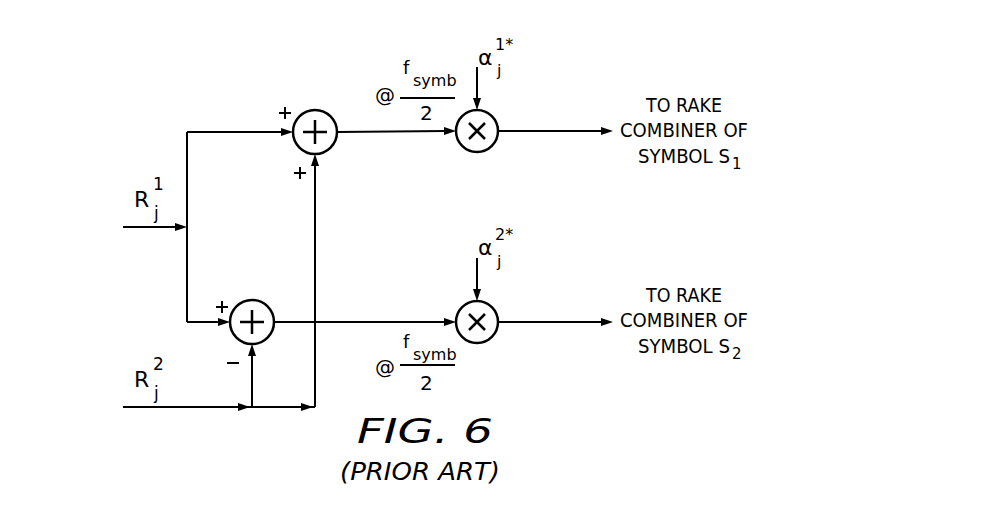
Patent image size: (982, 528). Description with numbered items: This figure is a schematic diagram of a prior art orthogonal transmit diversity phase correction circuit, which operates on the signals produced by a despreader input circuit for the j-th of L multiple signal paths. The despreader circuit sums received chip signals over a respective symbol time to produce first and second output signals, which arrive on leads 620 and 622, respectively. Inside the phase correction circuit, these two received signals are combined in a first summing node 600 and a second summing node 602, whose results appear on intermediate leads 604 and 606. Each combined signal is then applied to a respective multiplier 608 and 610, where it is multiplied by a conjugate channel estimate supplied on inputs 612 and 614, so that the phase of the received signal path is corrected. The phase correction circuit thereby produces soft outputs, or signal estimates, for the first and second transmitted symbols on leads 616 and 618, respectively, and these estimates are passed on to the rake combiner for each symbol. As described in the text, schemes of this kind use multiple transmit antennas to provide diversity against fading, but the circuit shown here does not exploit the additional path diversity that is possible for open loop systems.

The first adder (summing node) 600 is at (317, 110).
The second adder (difference node) 602 is at (255, 300).
The output of first adder 604 is at (390, 134).
The output of second adder 606 is at (393, 319).
The first multiplier 608 is at (480, 152).
The second multiplier 610 is at (480, 343).
The conjugate channel estimate input alpha j 1* 612 is at (480, 90).
The conjugate channel estimate input alpha j 2* 614 is at (480, 280).
The lead for signal estimate of symbol S1 616 is at (550, 134).
The lead for signal estimate of symbol S2 618 is at (550, 325).
The lead for first despreader output signal 620 is at (150, 230).
The lead for second despreader output signal 622 is at (150, 410).